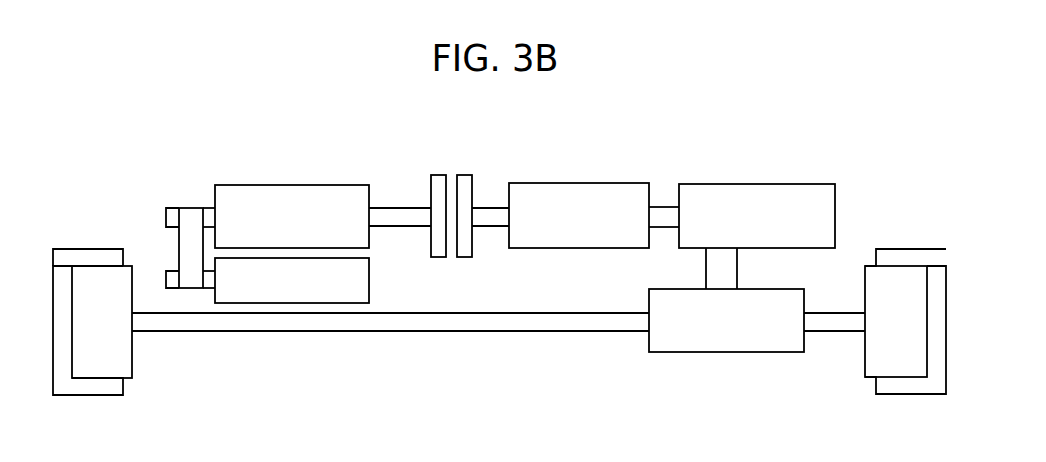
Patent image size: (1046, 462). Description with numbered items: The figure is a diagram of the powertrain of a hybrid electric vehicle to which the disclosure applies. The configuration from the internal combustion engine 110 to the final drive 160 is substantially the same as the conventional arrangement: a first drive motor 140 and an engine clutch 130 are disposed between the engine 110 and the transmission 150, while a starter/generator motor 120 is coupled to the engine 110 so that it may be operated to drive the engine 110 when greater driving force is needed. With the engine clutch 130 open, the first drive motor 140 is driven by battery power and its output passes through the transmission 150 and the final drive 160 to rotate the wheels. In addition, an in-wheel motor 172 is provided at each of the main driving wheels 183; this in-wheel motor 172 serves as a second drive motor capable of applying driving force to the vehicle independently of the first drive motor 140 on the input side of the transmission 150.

The internal combustion engine 110 is at (290, 184).
The starter/generator motor 120 is at (370, 278).
The engine clutch 130 is at (436, 174).
The first drive motor 140 is at (578, 183).
The transmission 150 is at (756, 184).
The final drive 160 is at (648, 350).
The in-wheel motor 172 is at (133, 367).
The main driving wheel 183 is at (85, 248).